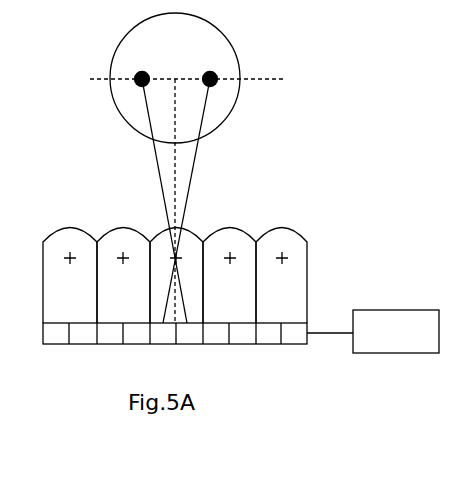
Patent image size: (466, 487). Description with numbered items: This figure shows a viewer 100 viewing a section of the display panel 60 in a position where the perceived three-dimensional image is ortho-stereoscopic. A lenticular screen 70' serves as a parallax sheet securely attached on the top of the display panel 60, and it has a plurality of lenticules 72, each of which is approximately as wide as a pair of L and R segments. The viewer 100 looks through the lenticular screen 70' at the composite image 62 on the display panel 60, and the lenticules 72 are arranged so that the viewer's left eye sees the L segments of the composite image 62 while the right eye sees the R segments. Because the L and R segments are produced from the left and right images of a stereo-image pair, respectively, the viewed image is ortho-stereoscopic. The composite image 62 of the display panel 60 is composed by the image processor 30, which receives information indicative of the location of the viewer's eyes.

The viewer 100 is at (247, 50).
The display panel 60 is at (186, 282).
The lenticular screen 70' is at (155, 258).
The lenticule 72 is at (70, 242).
The composite image 62 is at (37, 333).
The image processor 30 is at (395, 323).